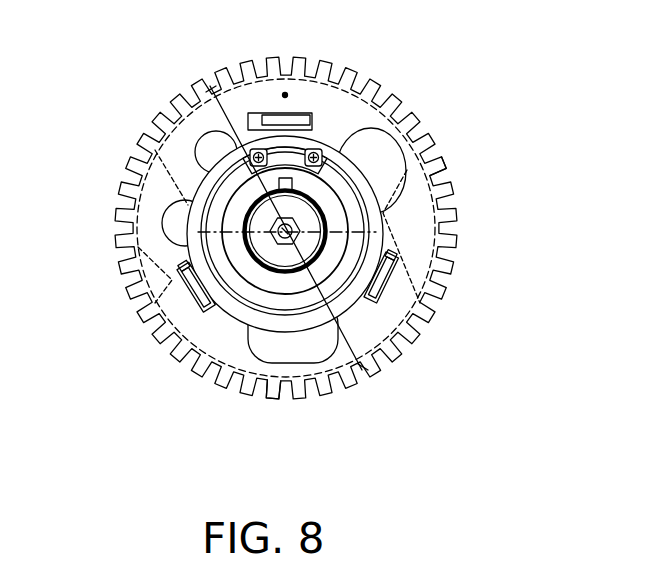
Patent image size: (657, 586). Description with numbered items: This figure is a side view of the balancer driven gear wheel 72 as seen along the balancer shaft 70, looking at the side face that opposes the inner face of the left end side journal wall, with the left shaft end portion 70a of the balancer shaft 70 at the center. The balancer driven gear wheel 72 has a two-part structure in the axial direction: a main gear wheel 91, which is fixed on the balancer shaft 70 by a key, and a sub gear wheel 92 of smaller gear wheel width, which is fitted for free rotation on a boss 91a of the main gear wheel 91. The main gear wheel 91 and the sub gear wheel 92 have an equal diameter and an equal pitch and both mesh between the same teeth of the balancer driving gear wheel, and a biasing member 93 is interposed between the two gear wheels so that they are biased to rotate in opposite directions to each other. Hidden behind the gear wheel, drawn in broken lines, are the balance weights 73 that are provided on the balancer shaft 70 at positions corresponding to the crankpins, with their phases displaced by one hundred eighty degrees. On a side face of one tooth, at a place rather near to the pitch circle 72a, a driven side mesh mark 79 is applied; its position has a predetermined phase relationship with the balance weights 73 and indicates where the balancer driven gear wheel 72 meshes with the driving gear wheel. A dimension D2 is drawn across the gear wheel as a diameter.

The balancer driven gear wheel 72 is at (351, 213).
The main gear wheel 91 is at (351, 213).
The sub gear wheel 92 is at (359, 221).
The boss 91a is at (335, 185).
The pitch circle 72a is at (455, 195).
The left shaft end portion 70a is at (383, 233).
The balancer shaft 70 is at (387, 228).
The balance weight 73 is at (138, 247).
The biasing member 93 is at (398, 296).
The driven side mesh mark 79 is at (280, 402).
The diameter D2 is at (287, 228).